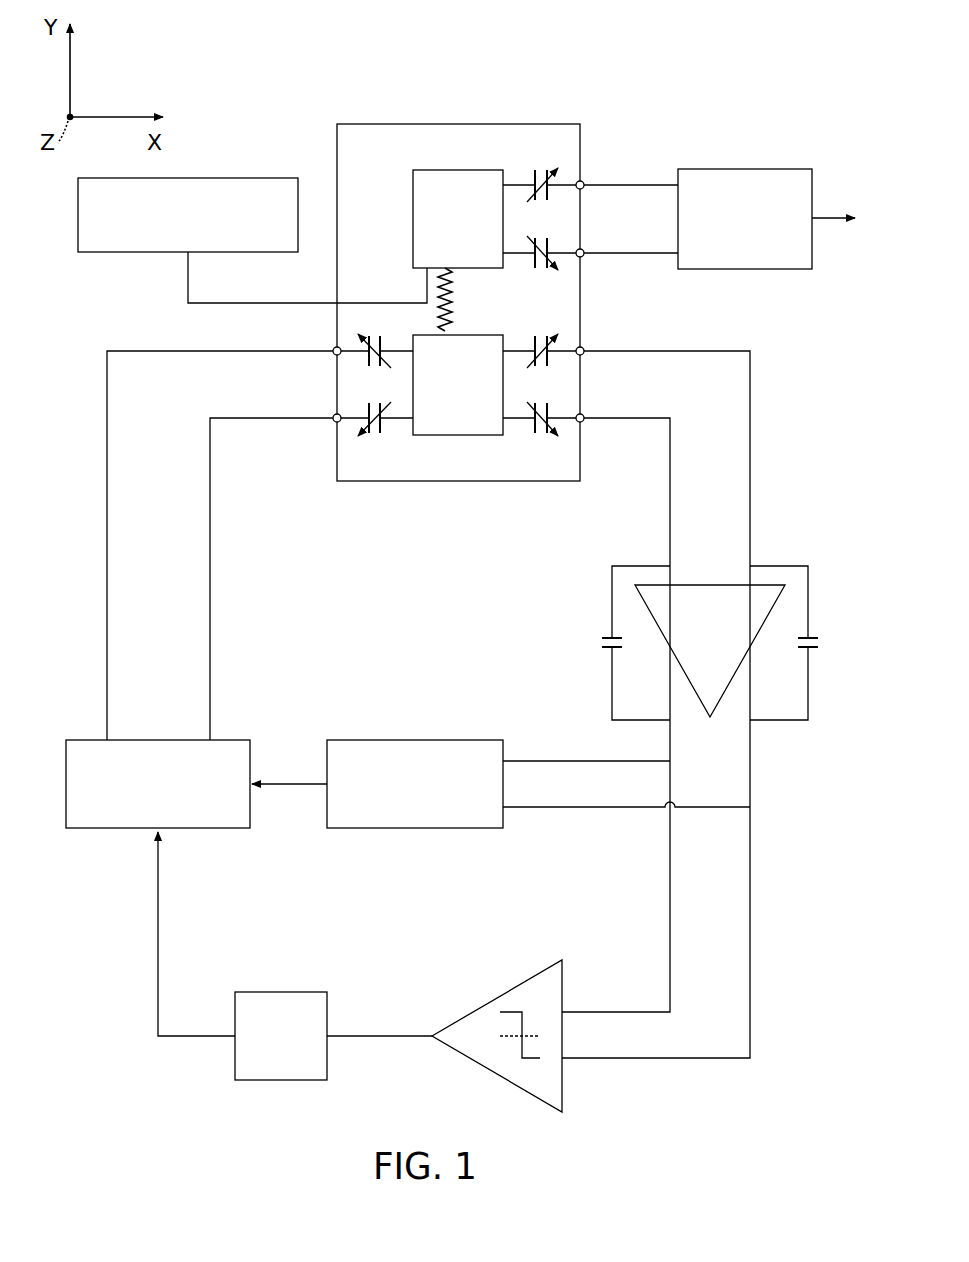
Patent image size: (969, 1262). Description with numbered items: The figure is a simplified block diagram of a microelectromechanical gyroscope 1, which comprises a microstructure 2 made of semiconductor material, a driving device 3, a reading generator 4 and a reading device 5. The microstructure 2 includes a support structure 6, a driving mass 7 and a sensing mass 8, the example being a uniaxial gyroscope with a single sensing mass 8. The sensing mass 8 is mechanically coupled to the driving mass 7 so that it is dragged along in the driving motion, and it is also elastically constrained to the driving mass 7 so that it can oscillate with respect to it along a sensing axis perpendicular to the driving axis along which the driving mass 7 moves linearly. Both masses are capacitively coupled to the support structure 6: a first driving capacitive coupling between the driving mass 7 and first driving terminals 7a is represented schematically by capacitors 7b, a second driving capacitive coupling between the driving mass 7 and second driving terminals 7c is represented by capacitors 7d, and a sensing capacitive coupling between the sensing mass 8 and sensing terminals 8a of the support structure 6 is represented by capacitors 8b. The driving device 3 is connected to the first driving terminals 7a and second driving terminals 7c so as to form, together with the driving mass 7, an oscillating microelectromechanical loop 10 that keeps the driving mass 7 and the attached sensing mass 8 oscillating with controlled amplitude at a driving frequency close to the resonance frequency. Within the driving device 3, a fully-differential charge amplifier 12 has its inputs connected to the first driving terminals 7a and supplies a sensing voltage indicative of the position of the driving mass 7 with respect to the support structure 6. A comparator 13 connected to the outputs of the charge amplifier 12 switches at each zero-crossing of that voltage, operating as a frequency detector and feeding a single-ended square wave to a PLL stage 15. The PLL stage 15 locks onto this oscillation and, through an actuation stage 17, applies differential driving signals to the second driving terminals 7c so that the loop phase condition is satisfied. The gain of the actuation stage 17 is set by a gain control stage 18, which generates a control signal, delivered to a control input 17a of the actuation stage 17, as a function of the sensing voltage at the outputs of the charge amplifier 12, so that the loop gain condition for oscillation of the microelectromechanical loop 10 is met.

The microelectromechanical gyroscope 1 is at (236, 67).
The microstructure 2 is at (517, 112).
The driving device 3 is at (148, 1055).
The reading generator 4 is at (215, 178).
The reading device 5 is at (722, 169).
The support structure 6 is at (337, 152).
The driving mass 7 is at (458, 385).
The first driving terminals 7a is at (584, 356).
The capacitors 7b is at (541, 361).
The second driving terminals 7c is at (333, 356).
The capacitors 7d is at (372, 365).
The sensing mass 8 is at (458, 219).
The sensing terminals 8a is at (584, 190).
The capacitors 8b is at (541, 195).
The oscillating microelectromechanical loop 10 is at (780, 476).
The charge amplifier 12 is at (708, 592).
The comparator 13 is at (478, 1006).
The PLL stage 15 is at (293, 991).
The actuation stage 17 is at (165, 739).
The control input 17a is at (258, 790).
The gain control stage 18 is at (408, 739).